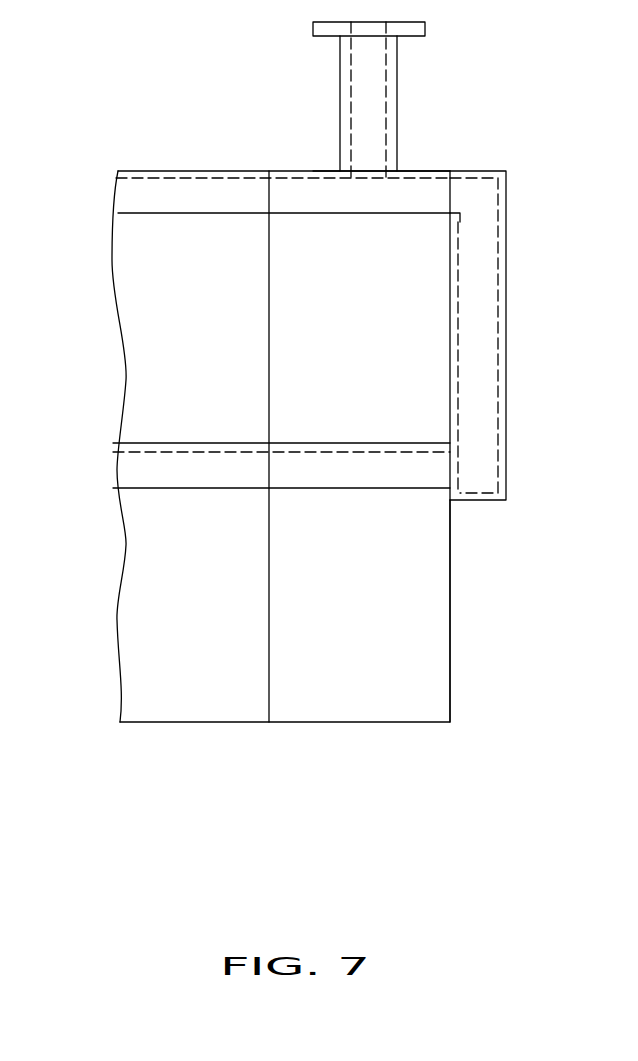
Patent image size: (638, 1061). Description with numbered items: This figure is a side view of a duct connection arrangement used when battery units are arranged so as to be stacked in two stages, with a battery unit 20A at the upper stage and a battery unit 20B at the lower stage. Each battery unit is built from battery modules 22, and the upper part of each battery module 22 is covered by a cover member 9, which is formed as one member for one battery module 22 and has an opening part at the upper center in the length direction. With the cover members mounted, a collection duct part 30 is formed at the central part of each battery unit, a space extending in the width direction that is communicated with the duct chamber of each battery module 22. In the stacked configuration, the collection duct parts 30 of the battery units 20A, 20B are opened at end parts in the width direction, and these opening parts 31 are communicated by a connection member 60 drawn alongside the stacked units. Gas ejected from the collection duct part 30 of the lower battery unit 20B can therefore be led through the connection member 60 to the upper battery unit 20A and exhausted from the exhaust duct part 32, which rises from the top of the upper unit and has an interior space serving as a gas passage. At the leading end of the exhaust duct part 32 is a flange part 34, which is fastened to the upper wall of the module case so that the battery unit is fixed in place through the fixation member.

The cover member 9 is at (242, 171).
The battery module 22 is at (138, 262).
The collection duct part 30 is at (182, 183).
The opening part 31 is at (450, 195).
The exhaust duct part 32 is at (397, 95).
The flange part 34 is at (425, 28).
The connection member 60 is at (506, 334).
The battery unit 20A is at (447, 163).
The battery unit 20B is at (460, 656).